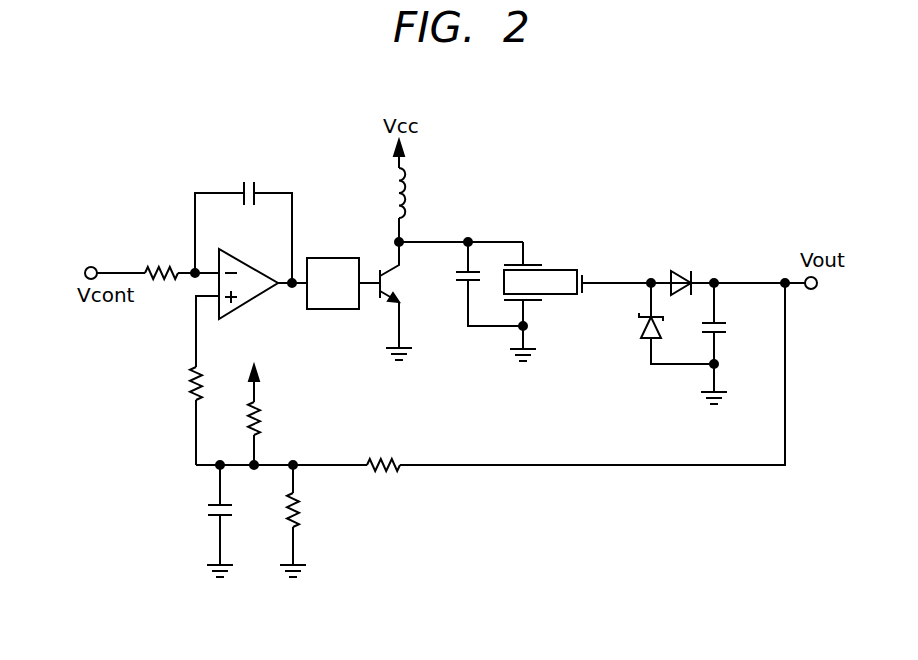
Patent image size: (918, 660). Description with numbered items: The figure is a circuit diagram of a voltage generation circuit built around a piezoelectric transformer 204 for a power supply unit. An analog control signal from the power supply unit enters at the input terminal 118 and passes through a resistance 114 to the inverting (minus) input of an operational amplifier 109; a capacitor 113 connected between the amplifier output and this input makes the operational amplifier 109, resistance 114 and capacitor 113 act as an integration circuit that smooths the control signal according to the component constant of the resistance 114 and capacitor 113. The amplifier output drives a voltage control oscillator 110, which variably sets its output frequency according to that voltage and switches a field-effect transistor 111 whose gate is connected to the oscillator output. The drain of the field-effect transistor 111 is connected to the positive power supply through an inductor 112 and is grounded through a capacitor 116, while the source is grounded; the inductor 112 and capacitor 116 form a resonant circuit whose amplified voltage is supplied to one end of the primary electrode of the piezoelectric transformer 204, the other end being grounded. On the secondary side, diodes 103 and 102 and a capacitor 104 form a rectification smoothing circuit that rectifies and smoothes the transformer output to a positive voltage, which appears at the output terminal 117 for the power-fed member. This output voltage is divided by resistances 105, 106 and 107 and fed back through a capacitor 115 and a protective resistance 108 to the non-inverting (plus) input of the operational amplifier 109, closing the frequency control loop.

The input terminal 118 is at (91, 267).
The resistance 114 is at (162, 266).
The operational amplifier 109 is at (255, 264).
The capacitor 113 is at (240, 184).
The voltage control oscillator 110 is at (335, 258).
The inductor 112 is at (394, 190).
The field-effect transistor 111 is at (392, 301).
The capacitor 116 is at (466, 285).
The piezoelectric transformer 204 is at (558, 270).
The diode 103 is at (688, 270).
The diode 102 is at (648, 338).
The capacitor 104 is at (718, 334).
The output terminal 117 is at (811, 289).
The protective resistance 108 is at (191, 385).
The resistance 106 is at (260, 421).
The resistance 105 is at (382, 459).
The resistance 107 is at (300, 519).
The capacitor 115 is at (215, 519).